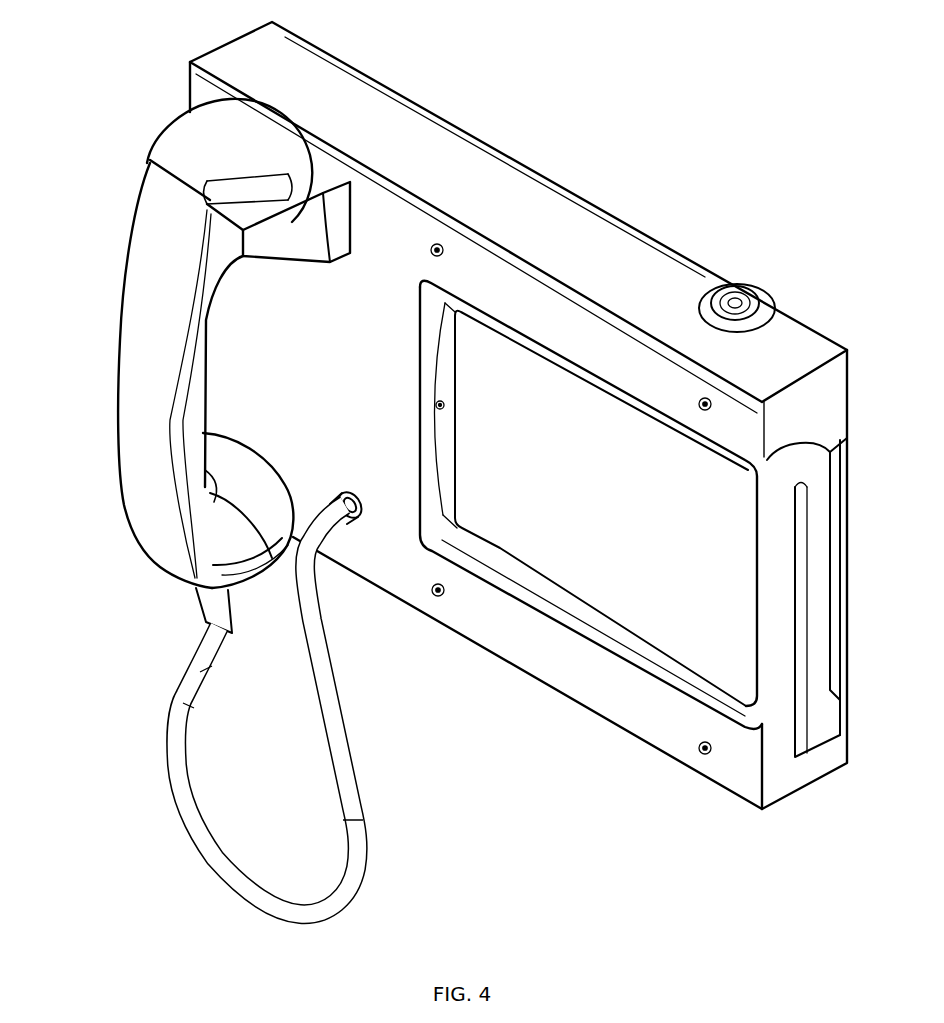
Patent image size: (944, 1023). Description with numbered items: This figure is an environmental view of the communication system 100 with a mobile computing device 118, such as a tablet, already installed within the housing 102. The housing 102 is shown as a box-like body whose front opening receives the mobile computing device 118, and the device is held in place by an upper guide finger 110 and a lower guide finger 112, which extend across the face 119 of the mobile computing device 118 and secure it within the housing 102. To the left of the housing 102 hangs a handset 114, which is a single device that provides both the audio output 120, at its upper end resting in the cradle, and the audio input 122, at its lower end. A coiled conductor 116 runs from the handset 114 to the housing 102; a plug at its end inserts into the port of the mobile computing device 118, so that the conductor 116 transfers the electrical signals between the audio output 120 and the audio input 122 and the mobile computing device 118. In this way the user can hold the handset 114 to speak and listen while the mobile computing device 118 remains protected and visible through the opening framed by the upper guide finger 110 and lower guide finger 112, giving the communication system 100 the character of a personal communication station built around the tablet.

The communication system 100 is at (512, 152).
The housing 102 is at (615, 258).
The upper guide finger 110 is at (647, 393).
The lower guide finger 112 is at (602, 663).
The handset 114 is at (155, 265).
The conductor 116 is at (357, 523).
The mobile computing device 118 is at (716, 634).
The face 119 is at (548, 537).
The audio output 120 is at (240, 133).
The audio input 122 is at (245, 527).